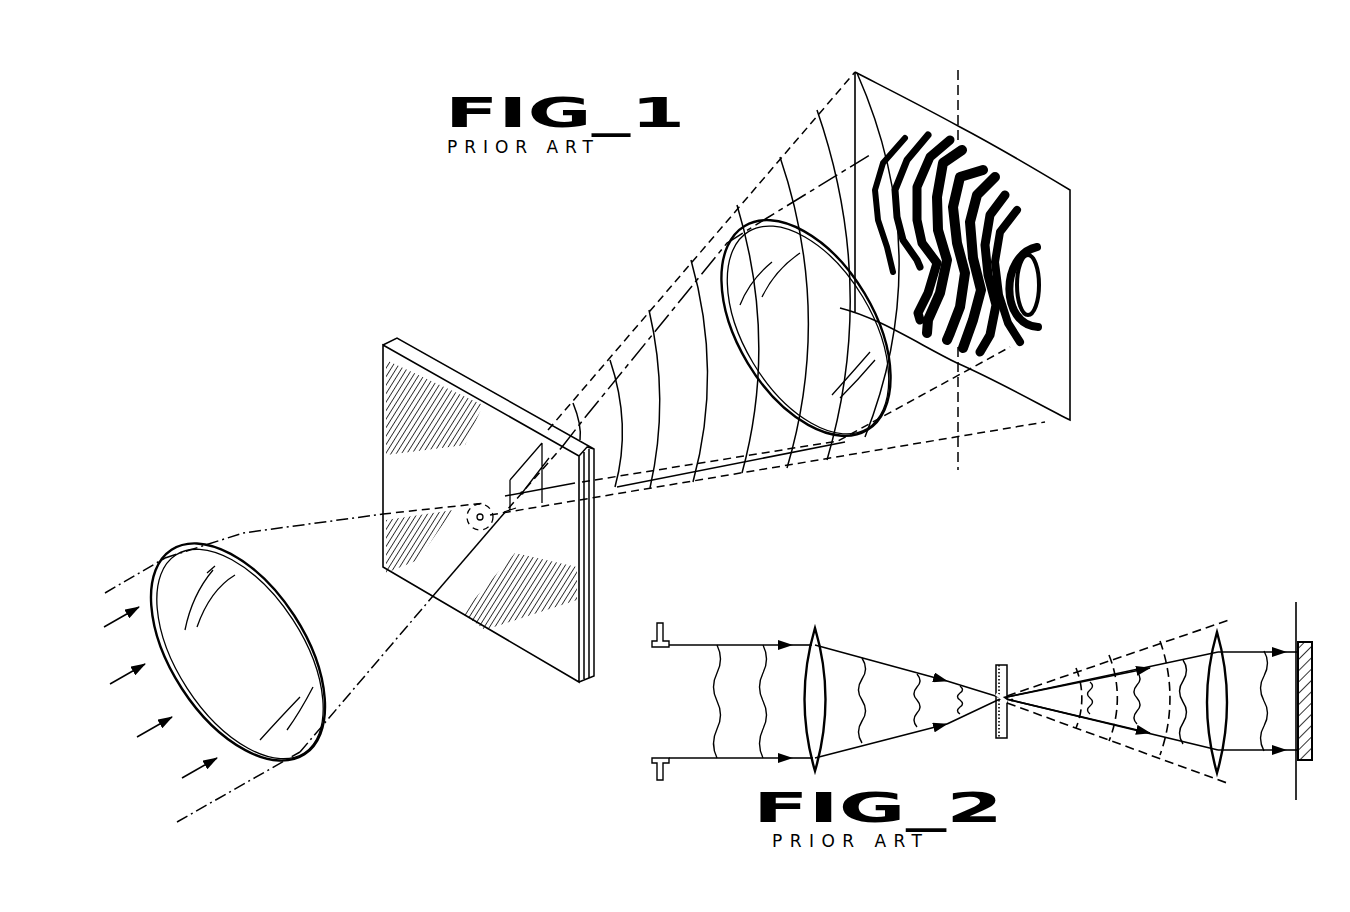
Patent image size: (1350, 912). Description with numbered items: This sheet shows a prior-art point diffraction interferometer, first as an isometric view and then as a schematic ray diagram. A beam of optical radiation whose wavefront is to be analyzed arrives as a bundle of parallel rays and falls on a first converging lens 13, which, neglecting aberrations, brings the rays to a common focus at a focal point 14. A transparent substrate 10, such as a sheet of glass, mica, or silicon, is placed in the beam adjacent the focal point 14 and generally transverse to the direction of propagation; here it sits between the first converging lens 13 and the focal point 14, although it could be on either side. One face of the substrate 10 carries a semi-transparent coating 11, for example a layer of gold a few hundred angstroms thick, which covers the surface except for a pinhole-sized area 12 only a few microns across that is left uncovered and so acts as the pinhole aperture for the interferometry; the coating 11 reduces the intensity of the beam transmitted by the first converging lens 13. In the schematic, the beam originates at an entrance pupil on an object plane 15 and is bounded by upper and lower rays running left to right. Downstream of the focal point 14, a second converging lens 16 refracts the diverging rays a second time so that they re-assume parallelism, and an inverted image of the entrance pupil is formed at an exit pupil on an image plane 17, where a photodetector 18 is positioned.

In FIG. 1, the transparent substrate 10 is at (419, 352).
In FIG. 2, the transparent substrate 10 is at (1000, 665).
In FIG. 1, the semi-transparent coating 11 is at (393, 359).
In FIG. 2, the semi-transparent coating 11 is at (995, 684).
In FIG. 1, the pinhole-sized area 12 is at (478, 512).
In FIG. 2, the pinhole-sized area 12 is at (998, 700).
In FIG. 1, the first converging lens 13 is at (320, 731).
In FIG. 2, the first converging lens 13 is at (818, 638).
In FIG. 1, the focal point 14 is at (522, 493).
In FIG. 2, the focal point 14 is at (1020, 703).
In FIG. 2, the object plane 15 is at (666, 637).
In FIG. 1, the second converging lens 16 is at (728, 247).
In FIG. 2, the second converging lens 16 is at (1223, 760).
In FIG. 1, the image plane 17 is at (990, 143).
In FIG. 2, the image plane 17 is at (1296, 620).
In FIG. 2, the photodetector 18 is at (1312, 660).